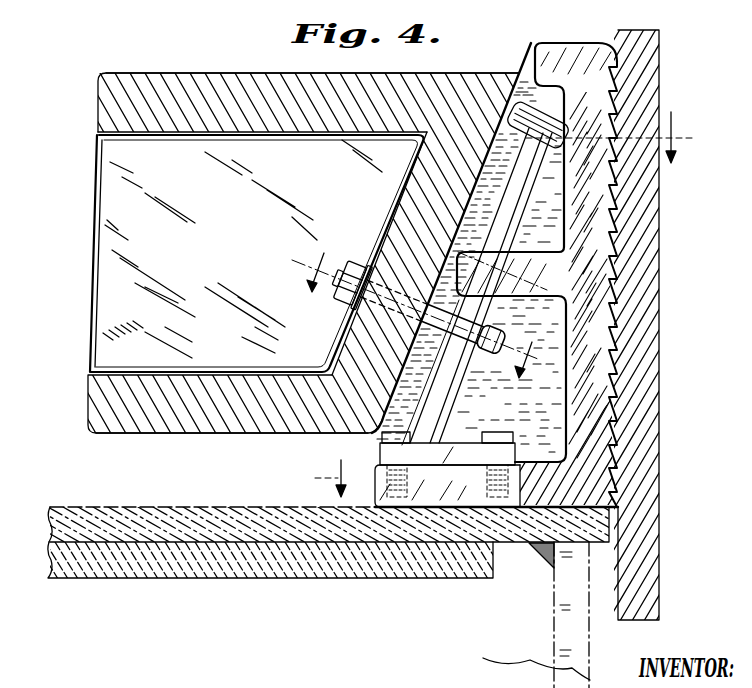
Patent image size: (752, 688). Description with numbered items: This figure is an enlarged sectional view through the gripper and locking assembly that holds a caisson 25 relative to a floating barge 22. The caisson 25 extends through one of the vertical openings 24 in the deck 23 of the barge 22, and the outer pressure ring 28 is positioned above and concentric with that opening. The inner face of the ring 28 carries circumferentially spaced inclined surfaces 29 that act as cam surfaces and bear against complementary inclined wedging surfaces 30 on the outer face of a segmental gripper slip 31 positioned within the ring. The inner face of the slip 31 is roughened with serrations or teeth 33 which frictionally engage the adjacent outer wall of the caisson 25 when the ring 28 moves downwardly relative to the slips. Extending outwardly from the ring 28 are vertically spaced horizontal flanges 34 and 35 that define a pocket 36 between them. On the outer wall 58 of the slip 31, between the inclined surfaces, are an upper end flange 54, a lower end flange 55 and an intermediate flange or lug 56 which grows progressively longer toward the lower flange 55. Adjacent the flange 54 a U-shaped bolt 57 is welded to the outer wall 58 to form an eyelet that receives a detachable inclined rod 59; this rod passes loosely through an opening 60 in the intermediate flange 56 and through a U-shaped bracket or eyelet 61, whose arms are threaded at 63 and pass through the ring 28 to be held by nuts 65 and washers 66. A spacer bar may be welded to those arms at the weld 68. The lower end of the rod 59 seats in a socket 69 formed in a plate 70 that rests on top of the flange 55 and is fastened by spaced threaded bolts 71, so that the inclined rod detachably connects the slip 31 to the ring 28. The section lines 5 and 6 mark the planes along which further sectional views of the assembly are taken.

The floating barge 22 is at (230, 580).
The deck 23 is at (158, 522).
The vertical openings 24 is at (608, 530).
The caisson 25 is at (659, 53).
The outer pressure ring 28 is at (275, 70).
The inclined surfaces 29 is at (516, 78).
The inclined surfaces 30 is at (533, 50).
The segmental gripper slips 31 is at (594, 103).
The serrations 33 is at (628, 236).
The upper horizontal flange 34 is at (159, 83).
The lower horizontal flange 35 is at (100, 410).
The pocket 36 is at (127, 280).
The end flange 54 is at (581, 36).
The end flange 55 is at (453, 480).
The intermediate flange 56 is at (513, 292).
The U-shaped bolt 57 is at (510, 113).
The outer wall 58 is at (531, 191).
The detachable inclined rod 59 is at (505, 205).
The opening 60 is at (458, 240).
The U-shaped bracket 61 is at (470, 352).
The threaded portions 63 is at (334, 288).
The nuts 65 is at (348, 306).
The washers 66 is at (376, 265).
The weld 68 is at (427, 335).
The socket 69 is at (437, 448).
The plate 70 is at (462, 450).
The threaded bolts 71 is at (501, 438).
The section line 5- 5 is at (504, 304).
The section line 6- 6 is at (412, 314).